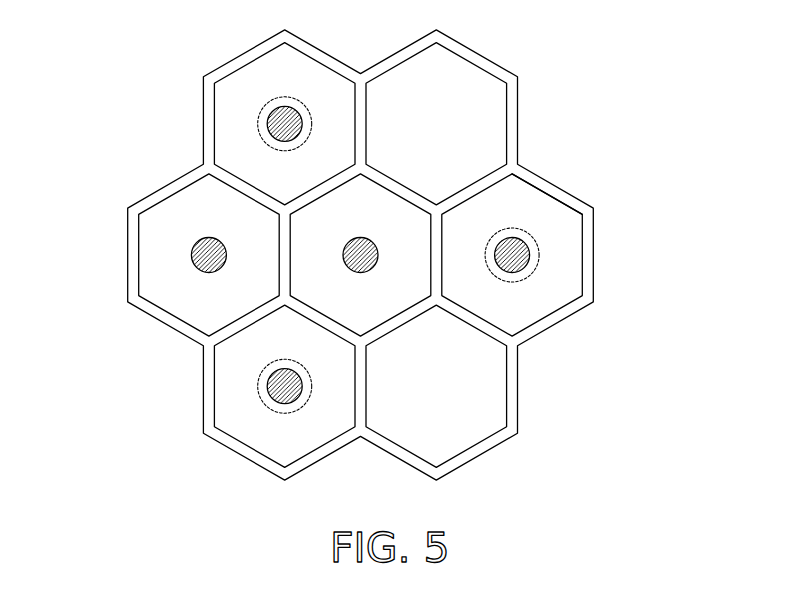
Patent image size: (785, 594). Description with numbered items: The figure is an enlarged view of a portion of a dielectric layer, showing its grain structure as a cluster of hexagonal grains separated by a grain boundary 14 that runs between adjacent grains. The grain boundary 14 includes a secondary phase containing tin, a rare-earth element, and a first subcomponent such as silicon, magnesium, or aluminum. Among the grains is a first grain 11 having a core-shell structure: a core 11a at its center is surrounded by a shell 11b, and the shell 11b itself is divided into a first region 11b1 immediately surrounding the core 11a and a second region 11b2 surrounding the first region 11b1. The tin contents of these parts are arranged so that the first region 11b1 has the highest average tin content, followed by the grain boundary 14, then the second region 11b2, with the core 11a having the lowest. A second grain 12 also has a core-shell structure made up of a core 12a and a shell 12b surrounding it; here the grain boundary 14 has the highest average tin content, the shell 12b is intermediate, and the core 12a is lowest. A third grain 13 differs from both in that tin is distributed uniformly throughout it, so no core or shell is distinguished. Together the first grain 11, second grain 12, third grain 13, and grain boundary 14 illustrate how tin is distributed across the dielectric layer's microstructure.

The first grain 11 is at (608, 247).
The core 11a is at (524, 257).
The shell 11b is at (587, 247).
The first region 11b1 is at (529, 240).
The second region 11b2 is at (545, 205).
The second grain 12 is at (147, 244).
The core 12a is at (192, 253).
The shell 12b is at (167, 193).
The third grain 13 is at (474, 80).
The grain boundary 14 is at (483, 181).